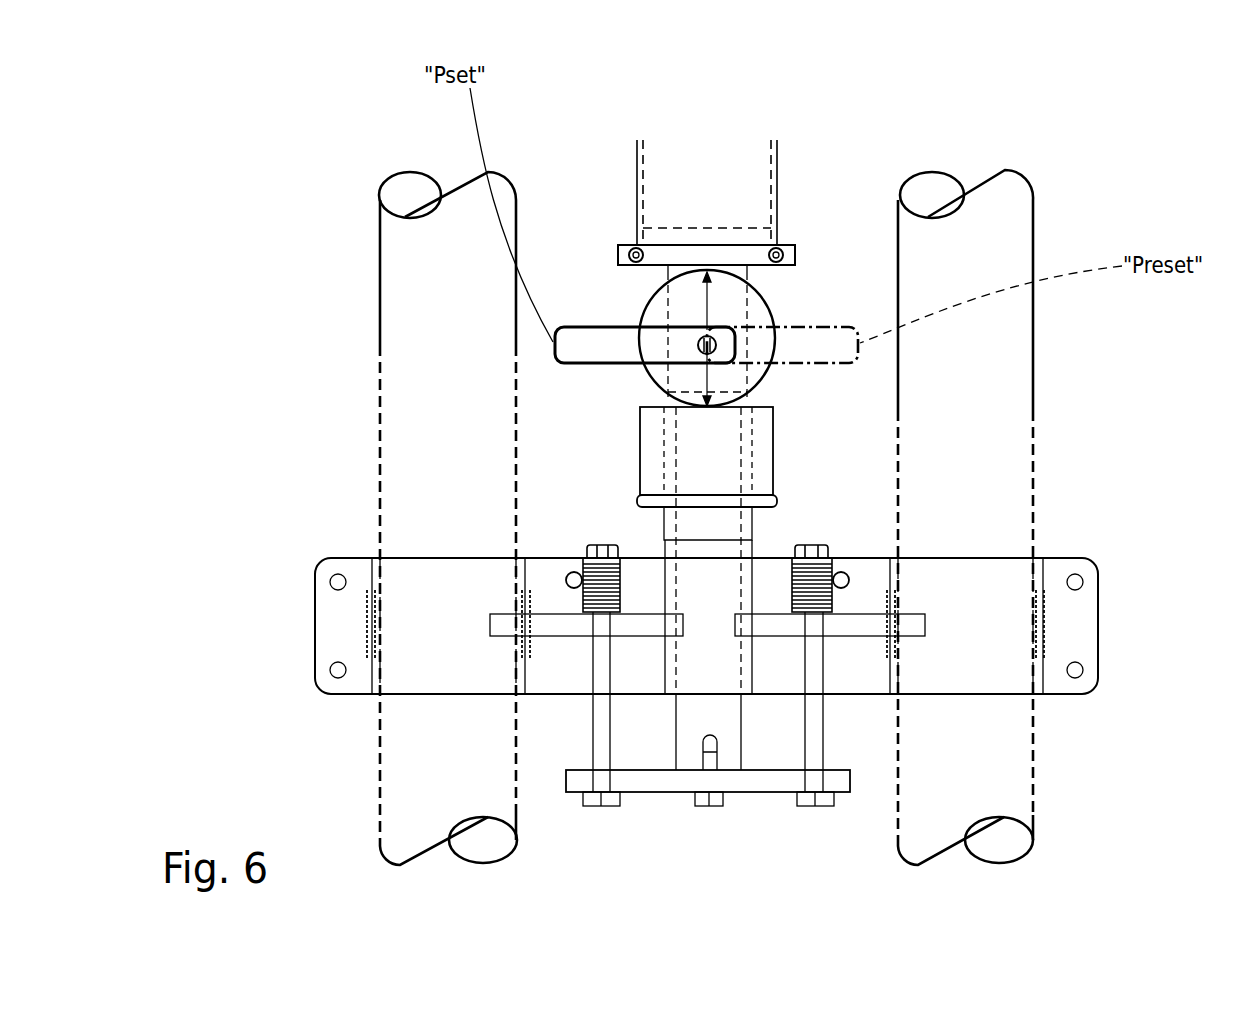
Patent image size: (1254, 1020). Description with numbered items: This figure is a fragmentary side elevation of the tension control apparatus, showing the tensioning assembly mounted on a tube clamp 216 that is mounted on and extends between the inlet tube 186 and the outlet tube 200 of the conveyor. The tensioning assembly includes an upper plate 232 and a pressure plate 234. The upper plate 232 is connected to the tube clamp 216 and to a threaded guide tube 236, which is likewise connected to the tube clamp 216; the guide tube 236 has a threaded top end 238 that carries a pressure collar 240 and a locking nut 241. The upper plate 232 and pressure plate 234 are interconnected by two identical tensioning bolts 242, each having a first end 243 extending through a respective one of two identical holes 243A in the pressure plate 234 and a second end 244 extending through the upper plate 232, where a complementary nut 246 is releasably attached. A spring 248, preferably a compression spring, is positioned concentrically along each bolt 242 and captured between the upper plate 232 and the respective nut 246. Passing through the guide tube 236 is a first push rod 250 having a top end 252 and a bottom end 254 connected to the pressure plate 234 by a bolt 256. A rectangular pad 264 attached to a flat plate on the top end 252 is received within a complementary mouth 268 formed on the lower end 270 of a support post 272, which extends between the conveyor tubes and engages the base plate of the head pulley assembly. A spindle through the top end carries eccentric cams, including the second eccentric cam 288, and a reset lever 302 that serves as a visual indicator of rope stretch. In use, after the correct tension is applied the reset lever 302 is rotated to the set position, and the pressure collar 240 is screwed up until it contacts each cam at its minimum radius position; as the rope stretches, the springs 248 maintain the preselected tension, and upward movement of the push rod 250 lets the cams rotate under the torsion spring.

The inlet tube 186 is at (1033, 392).
The outlet tube 200 is at (380, 370).
The tube clamp 216 is at (1013, 587).
The upper plate 232 is at (370, 625).
The pressure plate 234 is at (667, 793).
The threaded guide tube 236 is at (595, 727).
The threaded top end 238 is at (757, 547).
The pressure collar 240 is at (773, 433).
The locking nut 241 is at (777, 497).
The tensioning bolt 242 is at (592, 727).
The first end 243 is at (590, 757).
The hole 243A is at (620, 800).
The second end 244 is at (592, 647).
The nut 246 is at (590, 548).
The spring 248 is at (573, 580).
The first push rod 250 is at (645, 400).
The top end 252 is at (745, 282).
The bottom end 254 is at (742, 750).
The bolt 256 is at (705, 808).
The rectangular pad 264 is at (793, 232).
The mouth 268 is at (636, 248).
The lower end 270 is at (777, 190).
The support post 272 is at (777, 152).
The second eccentric cam 288 is at (775, 310).
The reset lever 302 is at (565, 325).